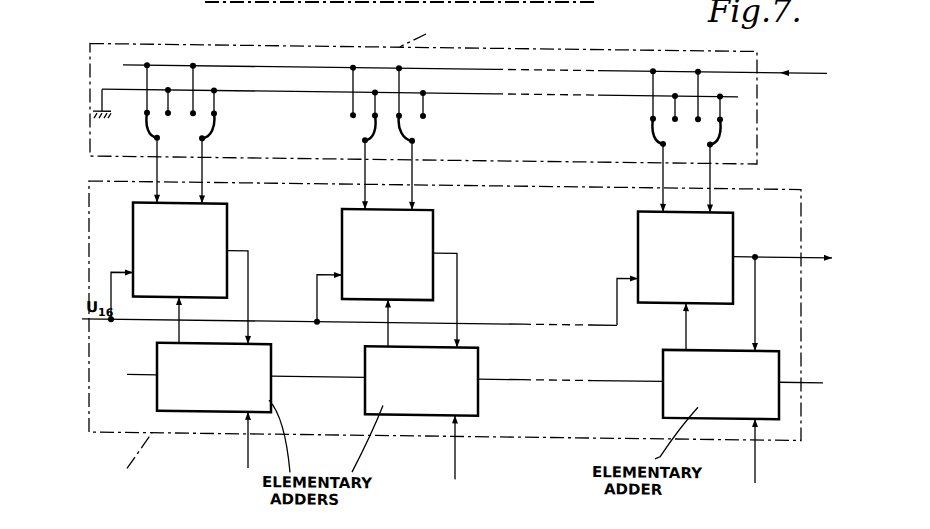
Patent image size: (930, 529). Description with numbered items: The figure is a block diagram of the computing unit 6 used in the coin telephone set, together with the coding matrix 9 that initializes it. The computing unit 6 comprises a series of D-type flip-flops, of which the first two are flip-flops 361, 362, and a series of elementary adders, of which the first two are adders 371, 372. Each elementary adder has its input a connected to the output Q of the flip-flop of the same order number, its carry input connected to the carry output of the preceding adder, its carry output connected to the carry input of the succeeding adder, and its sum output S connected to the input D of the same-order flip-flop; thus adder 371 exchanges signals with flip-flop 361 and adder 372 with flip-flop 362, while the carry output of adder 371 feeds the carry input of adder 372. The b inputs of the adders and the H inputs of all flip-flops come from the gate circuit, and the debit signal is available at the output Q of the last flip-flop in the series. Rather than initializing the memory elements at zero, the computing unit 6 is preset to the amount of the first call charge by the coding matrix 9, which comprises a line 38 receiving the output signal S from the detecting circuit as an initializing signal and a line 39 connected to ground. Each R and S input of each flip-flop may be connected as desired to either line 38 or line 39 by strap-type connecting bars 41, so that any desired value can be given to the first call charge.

The coding matrix 9 is at (758, 107).
The computing unit 6 is at (775, 178).
The line 38 is at (269, 63).
The line 39 is at (318, 90).
The strap-type connecting bars 41 is at (146, 125).
The D-type flip-flop 361 is at (228, 221).
The D-type flip-flop 362 is at (434, 222).
The elementary adder 371 is at (157, 401).
The elementary adder 372 is at (365, 403).